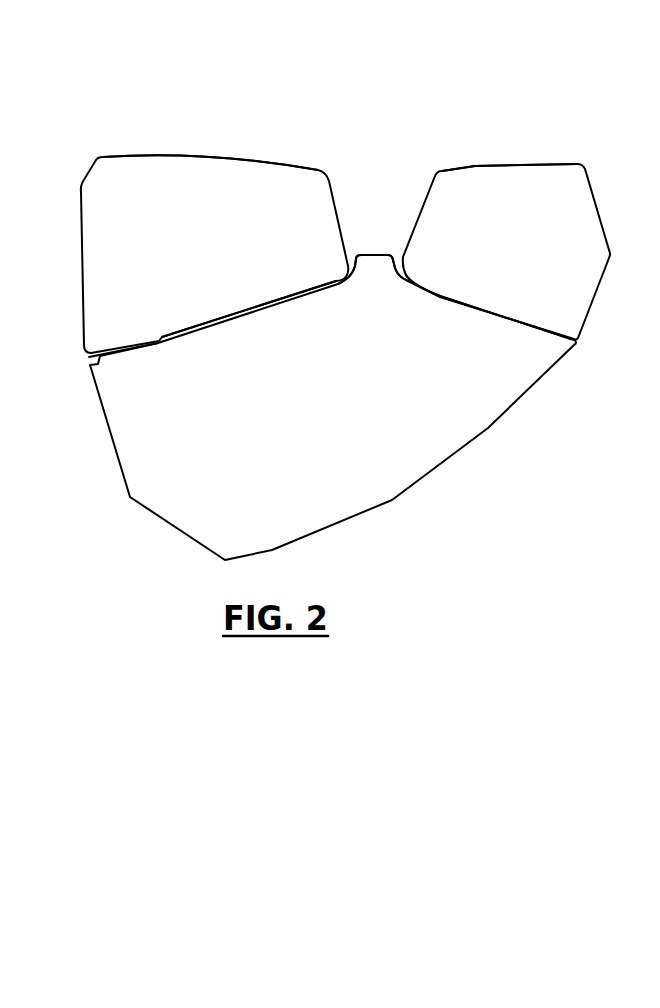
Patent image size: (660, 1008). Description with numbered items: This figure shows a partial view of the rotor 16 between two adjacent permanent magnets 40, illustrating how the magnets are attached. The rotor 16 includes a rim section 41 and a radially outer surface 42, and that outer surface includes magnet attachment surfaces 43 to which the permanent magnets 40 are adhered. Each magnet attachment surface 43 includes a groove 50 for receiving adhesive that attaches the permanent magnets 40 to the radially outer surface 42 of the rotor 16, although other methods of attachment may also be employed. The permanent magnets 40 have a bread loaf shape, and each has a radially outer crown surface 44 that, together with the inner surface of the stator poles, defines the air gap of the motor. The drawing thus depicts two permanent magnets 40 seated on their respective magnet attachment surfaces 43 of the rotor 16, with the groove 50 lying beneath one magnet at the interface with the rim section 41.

The rotor 16 is at (345, 331).
The permanent magnet 40 is at (183, 253).
The rim section 41 is at (313, 401).
The radially outer surface 42 is at (378, 257).
The magnet attachment surface 43 is at (273, 305).
The radially outer crown surface 44 is at (203, 153).
The groove 50 is at (118, 358).